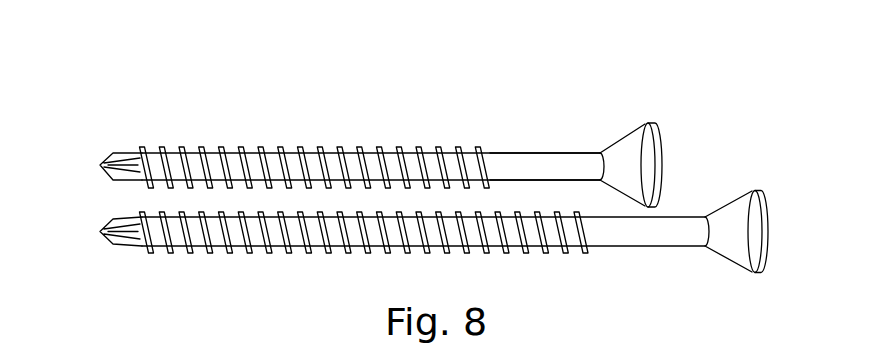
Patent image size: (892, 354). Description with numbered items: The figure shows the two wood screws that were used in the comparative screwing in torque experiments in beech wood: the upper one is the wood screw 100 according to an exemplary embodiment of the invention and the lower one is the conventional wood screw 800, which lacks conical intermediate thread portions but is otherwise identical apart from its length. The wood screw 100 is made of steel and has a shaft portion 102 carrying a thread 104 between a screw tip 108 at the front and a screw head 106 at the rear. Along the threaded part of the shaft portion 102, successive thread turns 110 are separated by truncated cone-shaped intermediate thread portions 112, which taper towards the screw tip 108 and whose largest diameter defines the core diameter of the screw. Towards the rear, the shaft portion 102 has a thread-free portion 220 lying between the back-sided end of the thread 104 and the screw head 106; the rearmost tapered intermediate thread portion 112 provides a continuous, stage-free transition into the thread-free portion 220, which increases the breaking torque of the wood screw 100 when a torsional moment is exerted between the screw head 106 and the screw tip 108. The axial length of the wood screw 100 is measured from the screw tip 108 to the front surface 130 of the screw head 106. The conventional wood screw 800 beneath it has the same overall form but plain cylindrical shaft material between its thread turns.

The wood screw 100 is at (682, 176).
The shaft portion 102 is at (583, 63).
The thread 104 is at (236, 135).
The screw head 106 is at (635, 140).
The screw tip 108 is at (84, 157).
The thread turns 110 is at (440, 148).
The intermediate thread portions 112 is at (312, 149).
The front surface 130 is at (658, 165).
The thread-free portion 220 is at (528, 160).
The conventional wood screw 800 is at (784, 236).